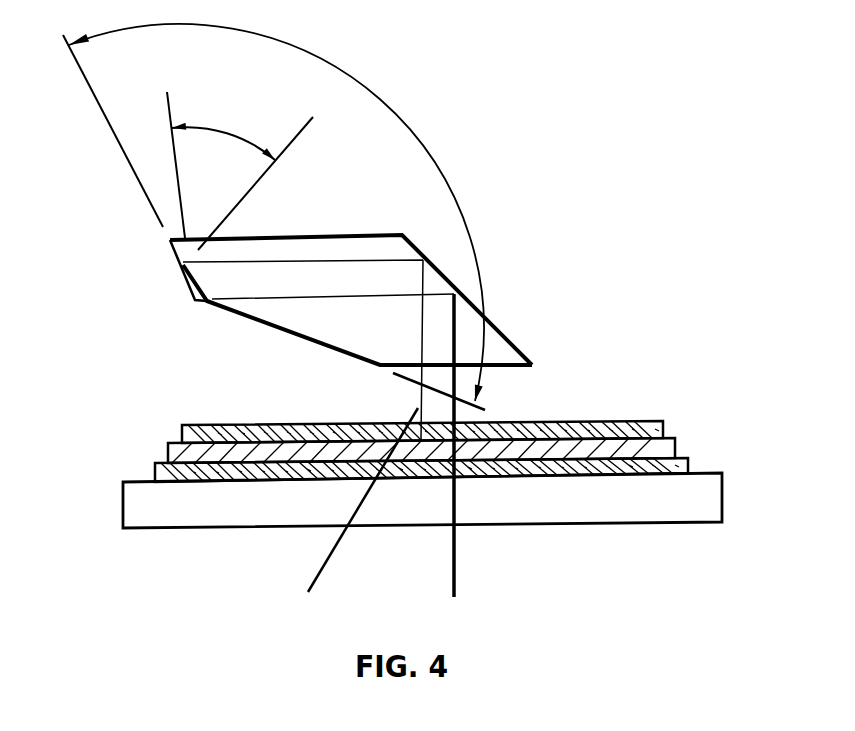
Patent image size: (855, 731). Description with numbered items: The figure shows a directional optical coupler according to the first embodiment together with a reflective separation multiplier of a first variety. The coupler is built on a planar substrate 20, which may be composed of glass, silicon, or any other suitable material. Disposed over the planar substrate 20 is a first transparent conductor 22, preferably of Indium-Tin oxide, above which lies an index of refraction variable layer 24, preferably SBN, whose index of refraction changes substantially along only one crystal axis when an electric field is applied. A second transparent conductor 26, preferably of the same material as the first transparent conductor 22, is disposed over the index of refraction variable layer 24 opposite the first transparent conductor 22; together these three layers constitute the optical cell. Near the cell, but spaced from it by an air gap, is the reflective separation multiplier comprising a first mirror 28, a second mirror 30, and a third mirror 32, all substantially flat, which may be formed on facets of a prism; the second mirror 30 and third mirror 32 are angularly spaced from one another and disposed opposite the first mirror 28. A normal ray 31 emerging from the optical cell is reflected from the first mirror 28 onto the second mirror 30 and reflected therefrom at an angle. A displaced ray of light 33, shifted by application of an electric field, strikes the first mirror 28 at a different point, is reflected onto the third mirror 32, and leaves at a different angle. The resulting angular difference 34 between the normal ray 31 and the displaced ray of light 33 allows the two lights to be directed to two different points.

The planar substrate 20 is at (722, 490).
The first transparent conductor 22 is at (688, 465).
The index of refraction variable layer 24 is at (675, 448).
The second transparent conductor 26 is at (663, 422).
The first mirror 28 is at (437, 270).
The second mirror 30 is at (307, 338).
The normal ray 31 is at (457, 568).
The third mirror 32 is at (123, 157).
The displaced ray of light 33 is at (313, 575).
The angular difference 34 is at (215, 132).